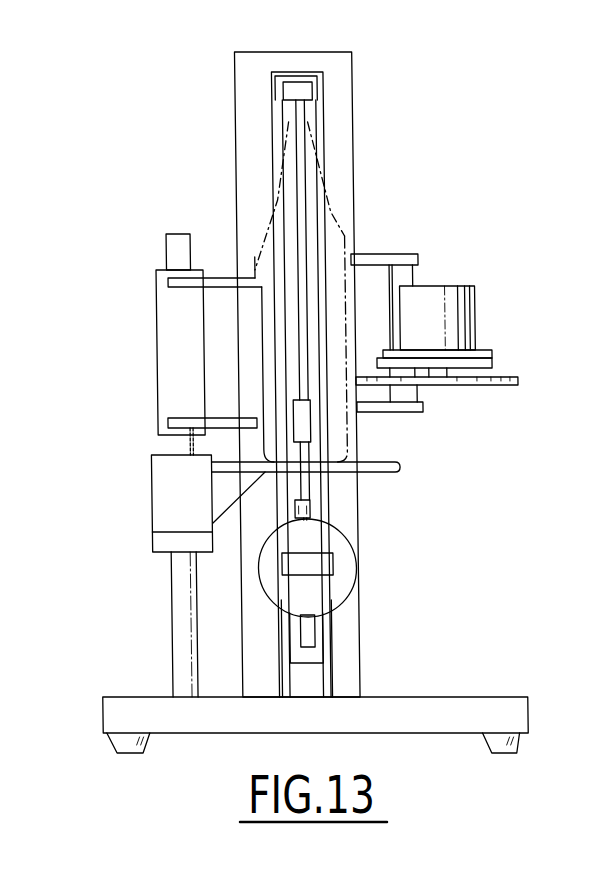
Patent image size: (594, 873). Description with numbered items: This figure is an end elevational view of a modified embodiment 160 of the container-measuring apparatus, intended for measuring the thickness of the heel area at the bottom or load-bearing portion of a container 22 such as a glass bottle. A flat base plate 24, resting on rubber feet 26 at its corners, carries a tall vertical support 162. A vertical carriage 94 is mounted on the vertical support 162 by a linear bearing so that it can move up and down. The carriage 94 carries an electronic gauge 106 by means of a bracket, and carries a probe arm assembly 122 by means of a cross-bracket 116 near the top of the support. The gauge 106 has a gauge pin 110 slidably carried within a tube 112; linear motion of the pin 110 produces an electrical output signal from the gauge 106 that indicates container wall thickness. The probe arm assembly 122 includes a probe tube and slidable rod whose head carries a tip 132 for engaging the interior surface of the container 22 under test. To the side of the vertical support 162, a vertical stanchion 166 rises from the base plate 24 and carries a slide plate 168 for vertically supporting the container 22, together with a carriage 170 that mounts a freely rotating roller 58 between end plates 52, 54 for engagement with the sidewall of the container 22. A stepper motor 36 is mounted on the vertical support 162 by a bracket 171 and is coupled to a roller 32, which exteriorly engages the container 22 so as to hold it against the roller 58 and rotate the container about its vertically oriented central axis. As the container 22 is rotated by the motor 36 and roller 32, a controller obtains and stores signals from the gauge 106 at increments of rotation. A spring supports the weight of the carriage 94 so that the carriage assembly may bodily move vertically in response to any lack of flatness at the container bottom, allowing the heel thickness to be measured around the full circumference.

The modified embodiment 160 is at (446, 56).
The vertical support 162 is at (331, 62).
The vertical carriage 94 is at (333, 139).
The cross-bracket 116 is at (287, 90).
The probe arm assembly 122 is at (284, 117).
The container 22 is at (342, 233).
The carriage 170 is at (160, 355).
The end plate 52 is at (209, 277).
The roller 58 is at (238, 302).
The end plate 54 is at (182, 423).
The slide plate 168 is at (394, 460).
The vertical stanchion 166 is at (172, 598).
The tip 132 is at (299, 452).
The gauge pin 110 is at (301, 487).
The tube 112 is at (298, 512).
The electronic gauge 106 is at (349, 587).
The bracket 171 is at (399, 254).
The stepper motor 36 is at (448, 290).
The roller 32 is at (512, 375).
The base plate 24 is at (434, 707).
The rubber feet 26 is at (123, 740).